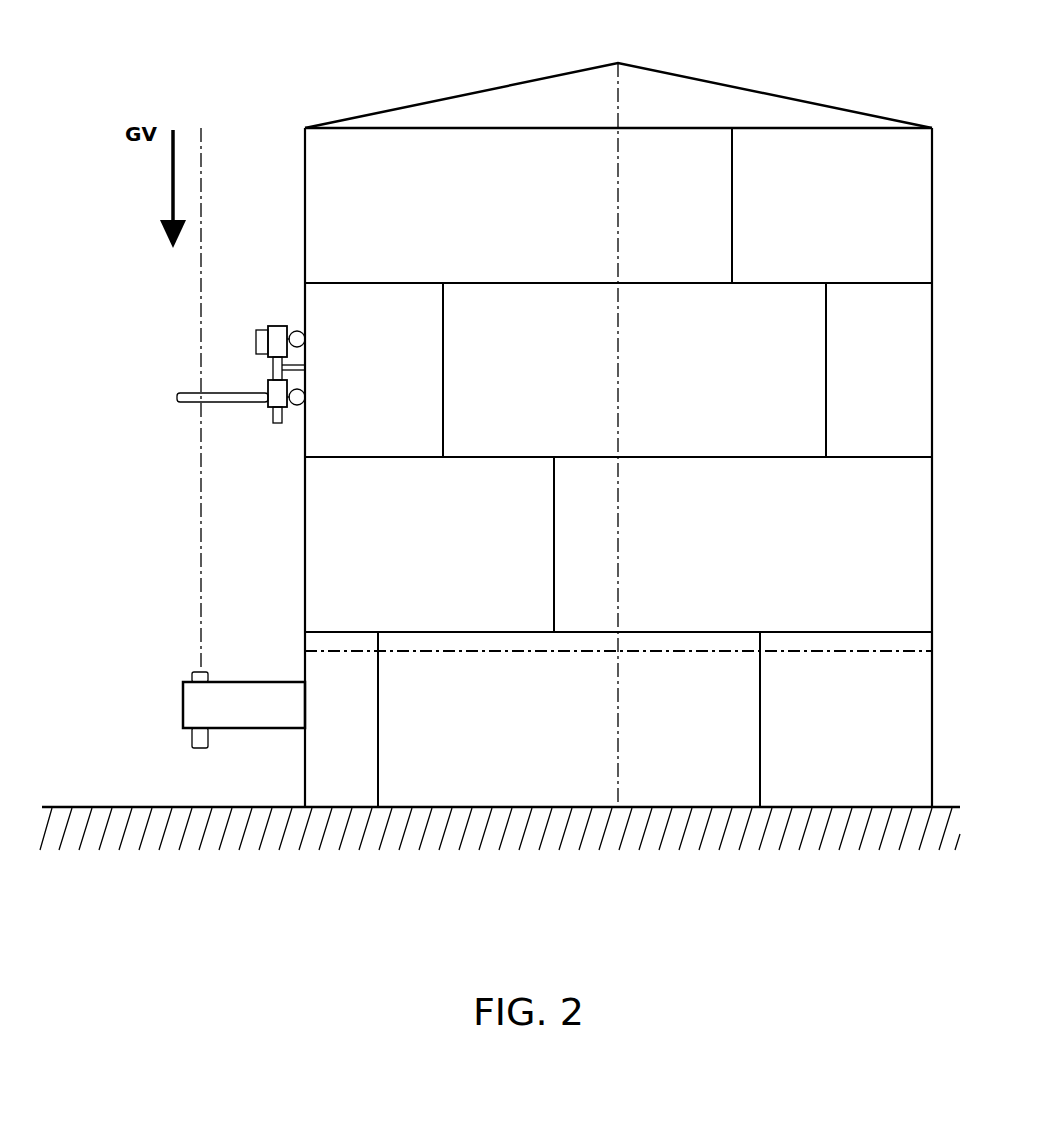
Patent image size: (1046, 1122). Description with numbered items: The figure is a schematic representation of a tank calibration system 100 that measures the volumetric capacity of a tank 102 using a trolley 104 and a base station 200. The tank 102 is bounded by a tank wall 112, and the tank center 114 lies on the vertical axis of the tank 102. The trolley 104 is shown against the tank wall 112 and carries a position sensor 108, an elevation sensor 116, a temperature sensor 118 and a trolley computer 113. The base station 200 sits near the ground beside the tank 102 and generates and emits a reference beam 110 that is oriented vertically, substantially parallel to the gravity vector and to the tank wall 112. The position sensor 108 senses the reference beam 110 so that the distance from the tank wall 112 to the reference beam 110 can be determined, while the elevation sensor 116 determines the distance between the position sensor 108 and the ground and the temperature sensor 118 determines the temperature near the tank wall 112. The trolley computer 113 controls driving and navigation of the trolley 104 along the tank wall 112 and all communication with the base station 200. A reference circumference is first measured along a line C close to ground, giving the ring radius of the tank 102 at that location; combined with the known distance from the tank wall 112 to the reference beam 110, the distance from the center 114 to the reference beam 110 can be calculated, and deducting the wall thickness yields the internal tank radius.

The tank calibration system 100 is at (138, 92).
The tank 102 is at (773, 95).
The trolley 104 is at (254, 373).
The position sensor 108 is at (225, 392).
The reference beam 110 is at (200, 557).
The tank wall 112 is at (305, 208).
The trolley computer 113 is at (257, 342).
The center of the tank 114 is at (620, 400).
The elevation sensor 116 is at (278, 424).
The temperature sensor 118 is at (307, 352).
The base station 200 is at (183, 692).
The line C / reference circumference C is at (668, 652).